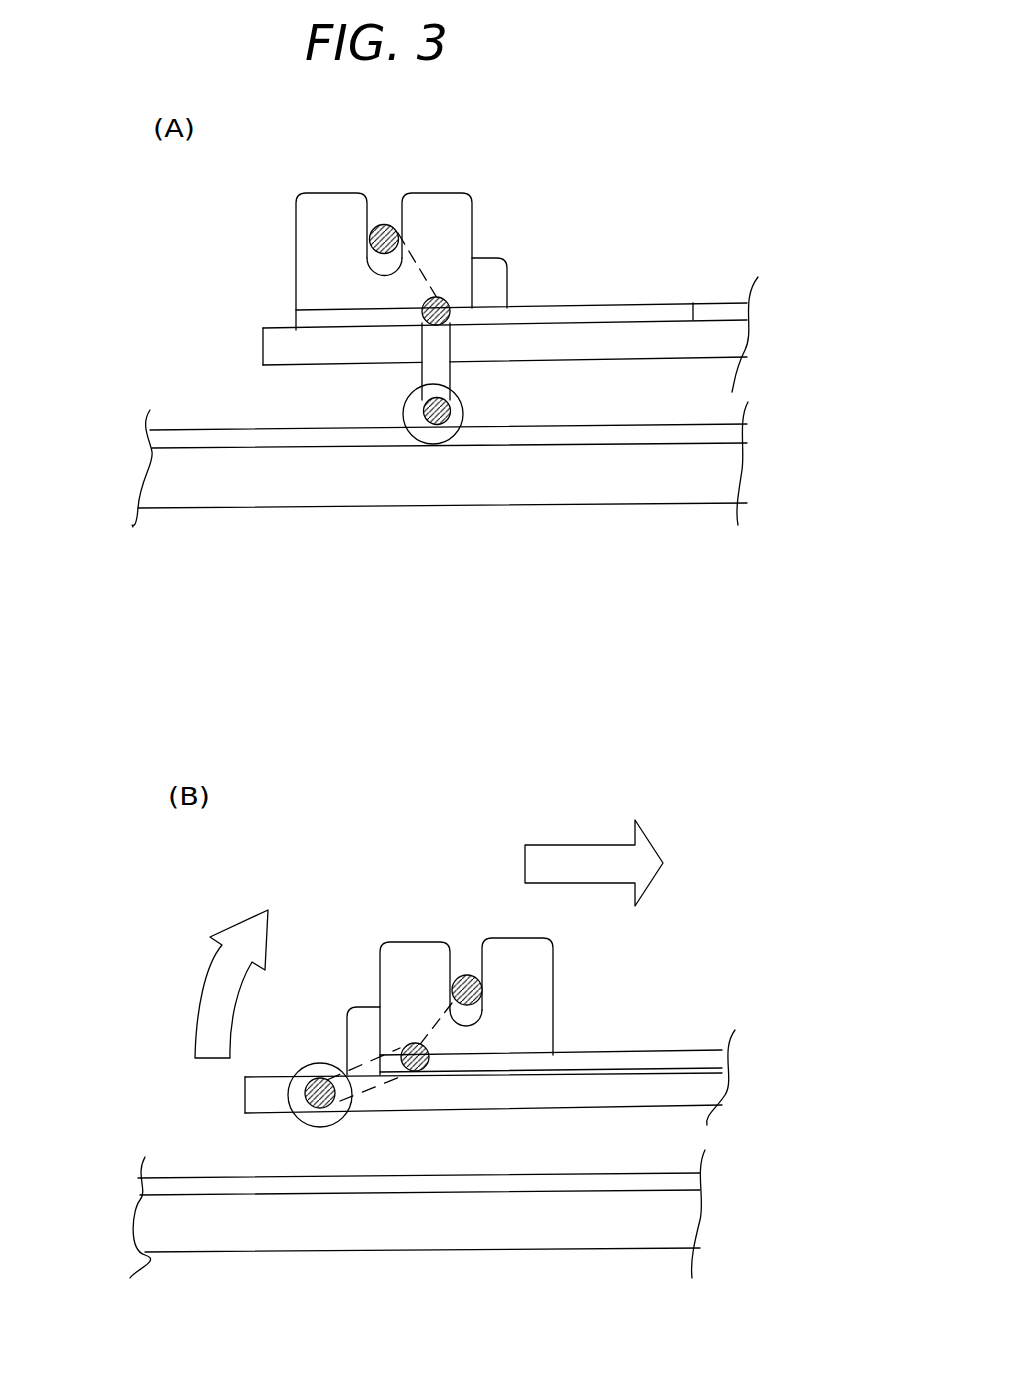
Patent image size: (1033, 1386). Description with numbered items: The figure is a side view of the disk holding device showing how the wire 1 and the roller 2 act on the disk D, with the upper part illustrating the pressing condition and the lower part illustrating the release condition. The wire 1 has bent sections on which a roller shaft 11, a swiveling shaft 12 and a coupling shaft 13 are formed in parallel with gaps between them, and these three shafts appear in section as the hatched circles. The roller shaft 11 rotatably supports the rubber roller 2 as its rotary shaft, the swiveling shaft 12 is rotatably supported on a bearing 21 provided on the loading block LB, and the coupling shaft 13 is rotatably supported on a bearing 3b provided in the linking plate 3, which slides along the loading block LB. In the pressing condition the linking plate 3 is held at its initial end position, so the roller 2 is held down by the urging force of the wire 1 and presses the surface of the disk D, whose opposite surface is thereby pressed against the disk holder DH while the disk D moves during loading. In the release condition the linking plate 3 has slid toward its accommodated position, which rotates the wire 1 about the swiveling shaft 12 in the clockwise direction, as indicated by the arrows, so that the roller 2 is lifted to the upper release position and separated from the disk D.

The wire 1 is at (153, 188).
The roller shaft 11 is at (420, 410).
The swiveling shaft 12 is at (418, 298).
The coupling shaft 13 is at (370, 230).
The roller 2 is at (435, 440).
The bearing 21 is at (495, 262).
The linking plate 3 is at (600, 310).
The bearing 3b is at (438, 200).
The loading block LB is at (665, 348).
The disk holder DH is at (297, 487).
The disk D is at (547, 437).